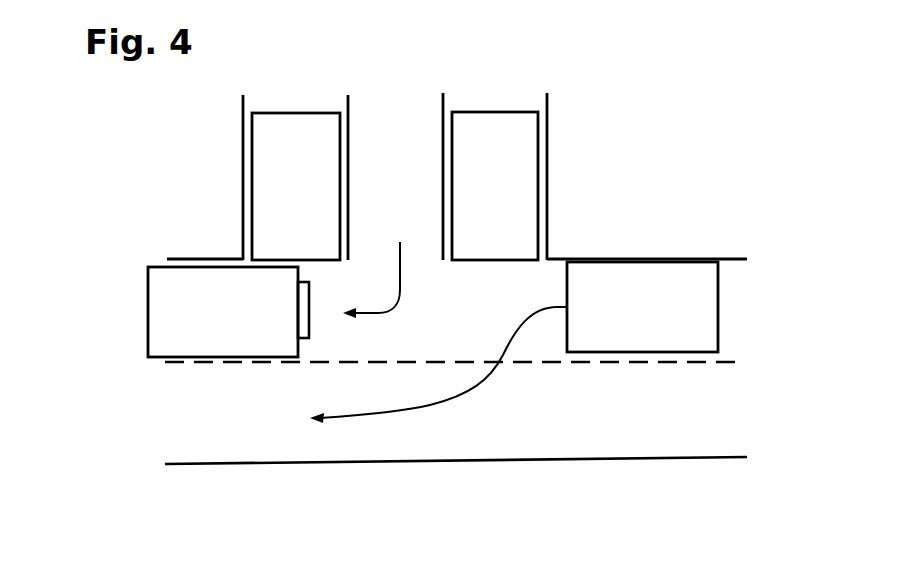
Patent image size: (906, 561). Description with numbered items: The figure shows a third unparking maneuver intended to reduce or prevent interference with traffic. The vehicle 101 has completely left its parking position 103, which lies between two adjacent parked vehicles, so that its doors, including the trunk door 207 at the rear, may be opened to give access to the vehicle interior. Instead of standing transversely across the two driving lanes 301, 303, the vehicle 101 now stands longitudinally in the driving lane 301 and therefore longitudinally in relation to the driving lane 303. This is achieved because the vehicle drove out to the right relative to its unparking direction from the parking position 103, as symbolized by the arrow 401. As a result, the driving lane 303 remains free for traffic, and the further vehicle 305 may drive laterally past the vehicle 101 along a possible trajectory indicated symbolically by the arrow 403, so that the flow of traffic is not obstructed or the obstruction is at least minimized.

The vehicle 101 is at (160, 313).
The parking position 103 is at (400, 125).
The trunk door 207 is at (309, 330).
The driving lane 301 is at (738, 288).
The driving lane 303 is at (690, 447).
The further vehicle 305 is at (686, 268).
The arrow 401 is at (400, 288).
The arrow 403 is at (463, 398).